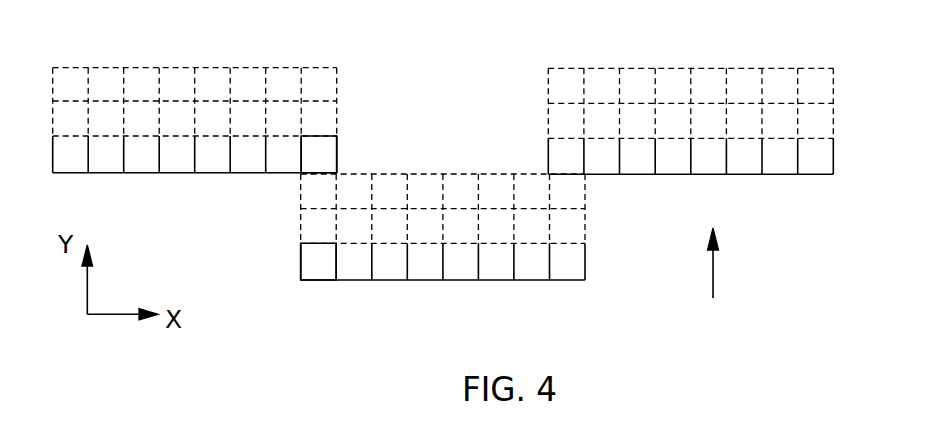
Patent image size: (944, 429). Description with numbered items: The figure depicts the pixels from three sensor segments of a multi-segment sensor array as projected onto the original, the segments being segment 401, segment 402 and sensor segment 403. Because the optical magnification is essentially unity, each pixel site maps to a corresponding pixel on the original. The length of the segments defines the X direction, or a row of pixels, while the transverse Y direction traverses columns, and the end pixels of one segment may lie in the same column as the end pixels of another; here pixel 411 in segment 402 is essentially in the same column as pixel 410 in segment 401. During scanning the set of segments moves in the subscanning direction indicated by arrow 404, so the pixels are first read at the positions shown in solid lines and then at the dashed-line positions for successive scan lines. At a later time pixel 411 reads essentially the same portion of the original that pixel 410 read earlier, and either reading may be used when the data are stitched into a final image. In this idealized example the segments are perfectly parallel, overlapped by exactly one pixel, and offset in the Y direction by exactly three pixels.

The segment 401 is at (143, 173).
The segment 402 is at (586, 257).
The sensor segment 403 is at (780, 175).
The arrow 404 is at (714, 268).
The pixel 410 is at (334, 170).
The pixel 411 is at (309, 268).